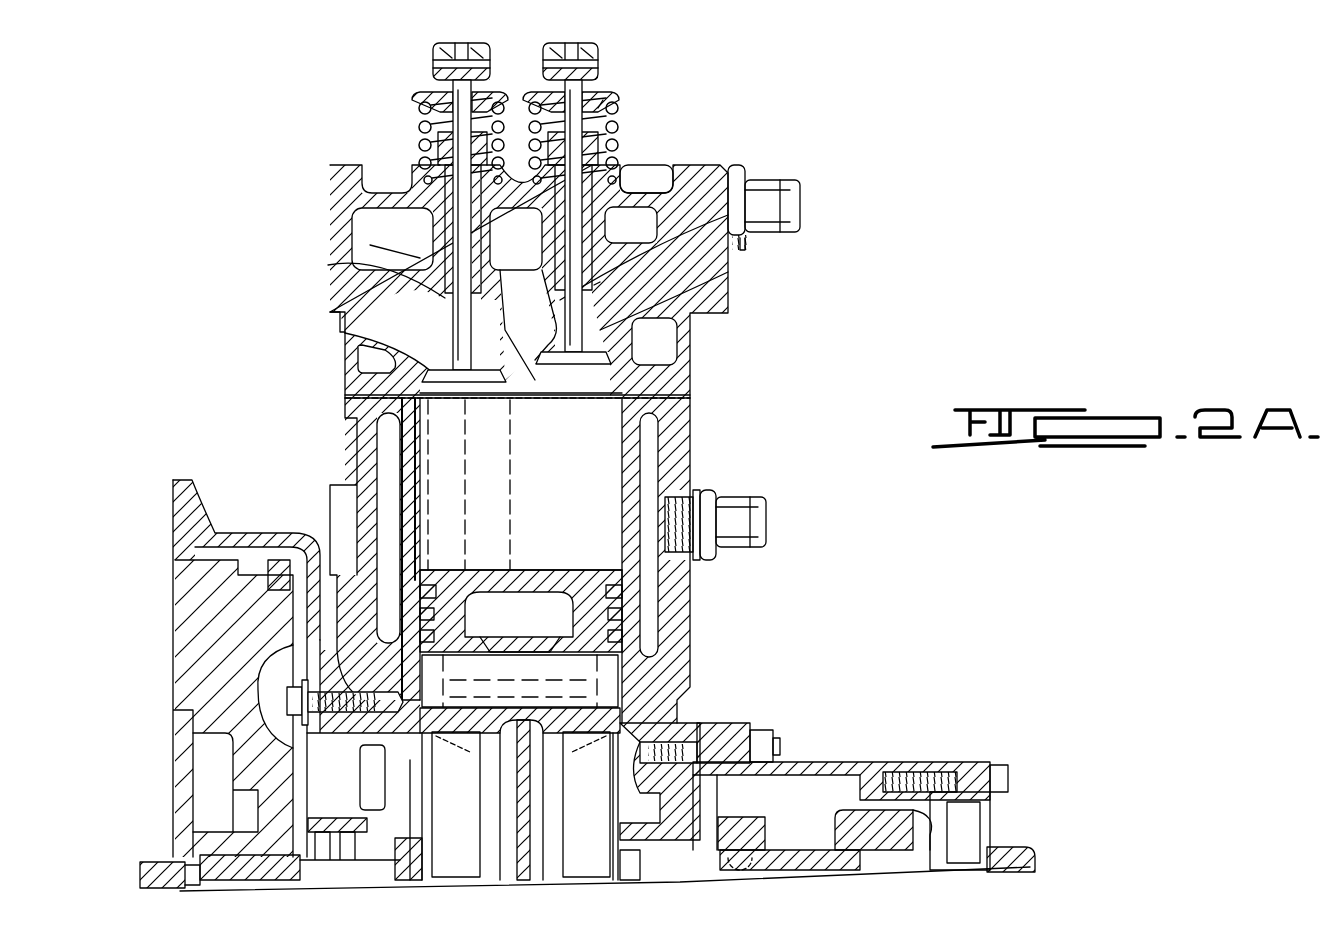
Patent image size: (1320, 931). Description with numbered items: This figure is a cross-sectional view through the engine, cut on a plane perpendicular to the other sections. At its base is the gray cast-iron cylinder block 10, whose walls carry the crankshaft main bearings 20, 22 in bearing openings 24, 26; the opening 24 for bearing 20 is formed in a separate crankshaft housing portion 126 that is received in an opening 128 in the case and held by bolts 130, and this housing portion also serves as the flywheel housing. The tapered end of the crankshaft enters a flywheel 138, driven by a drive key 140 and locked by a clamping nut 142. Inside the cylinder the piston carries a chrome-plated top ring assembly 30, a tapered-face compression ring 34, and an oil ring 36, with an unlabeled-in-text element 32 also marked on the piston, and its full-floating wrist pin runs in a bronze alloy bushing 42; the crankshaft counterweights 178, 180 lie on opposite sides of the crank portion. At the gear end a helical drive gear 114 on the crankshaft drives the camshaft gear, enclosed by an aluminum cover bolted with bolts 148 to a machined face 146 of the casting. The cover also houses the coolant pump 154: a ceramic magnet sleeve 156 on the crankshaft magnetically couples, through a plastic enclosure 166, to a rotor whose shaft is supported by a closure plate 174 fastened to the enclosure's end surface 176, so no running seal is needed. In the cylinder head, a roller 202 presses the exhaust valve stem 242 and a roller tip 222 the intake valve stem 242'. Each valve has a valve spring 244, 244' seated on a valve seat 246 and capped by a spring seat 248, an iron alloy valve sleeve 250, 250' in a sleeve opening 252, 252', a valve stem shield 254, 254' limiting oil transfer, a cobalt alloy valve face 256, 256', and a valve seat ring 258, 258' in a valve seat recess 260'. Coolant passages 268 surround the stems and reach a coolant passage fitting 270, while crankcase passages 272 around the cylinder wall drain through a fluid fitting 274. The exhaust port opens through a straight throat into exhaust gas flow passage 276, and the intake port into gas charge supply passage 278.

The cylinder block 10 is at (690, 712).
The crankshaft main bearing 20 is at (365, 840).
The crankshaft main bearing 22 is at (700, 850).
The bearing opening 24 is at (418, 848).
The bearing opening 26 is at (622, 852).
The top ring assembly 30 is at (624, 595).
The piston 32 is at (585, 600).
The compression ring 34 is at (624, 616).
The oil ring 36 is at (624, 638).
The bronze alloy bushing 42 is at (522, 832).
The drive gear 114 is at (762, 830).
The crankshaft housing portion 126 is at (300, 745).
The opening 128 is at (360, 755).
The bolt 130 is at (258, 690).
The flywheel 138 is at (230, 765).
The drive key 140 is at (200, 858).
The clamping nut 142 is at (160, 870).
The machined face 146 is at (705, 760).
The bolt 148 is at (772, 752).
The coolant pump 154 is at (975, 840).
The ceramic magnet sleeve 156 is at (855, 812).
The plastic enclosure 166 is at (950, 830).
The coolant pump closure plate 174 is at (1035, 866).
The end surface 176 is at (920, 800).
The counterweight 178 is at (603, 796).
The counterweight 180 is at (471, 801).
The roller 202 is at (598, 62).
The roller tip 222 is at (432, 52).
The exhaust valve stem 242 is at (517, 239).
The intake valve stem 242' is at (525, 322).
The valve spring 244 is at (610, 135).
The valve spring 244' is at (415, 96).
The valve seat 246 is at (608, 188).
The spring seat 248 is at (603, 100).
The valve sleeve 250 is at (606, 213).
The valve sleeve 250' is at (424, 220).
The sleeve opening 252 is at (631, 270).
The sleeve opening 252' is at (395, 238).
The valve stem shield 254 is at (610, 139).
The valve stem shield 254' is at (420, 141).
The valve face 256 is at (523, 560).
The valve face 256' is at (471, 485).
The valve seat ring 258 is at (586, 222).
The valve seat ring 258' is at (453, 231).
The valve seat recess 260' is at (478, 384).
The coolant passage 268 is at (410, 252).
The coolant passage fitting 270 is at (752, 210).
The coolant passage 272 is at (372, 478).
The fluid fitting 274 is at (760, 535).
The exhaust gas flow passage 276 is at (728, 272).
The gas charge supply passage 278 is at (320, 315).